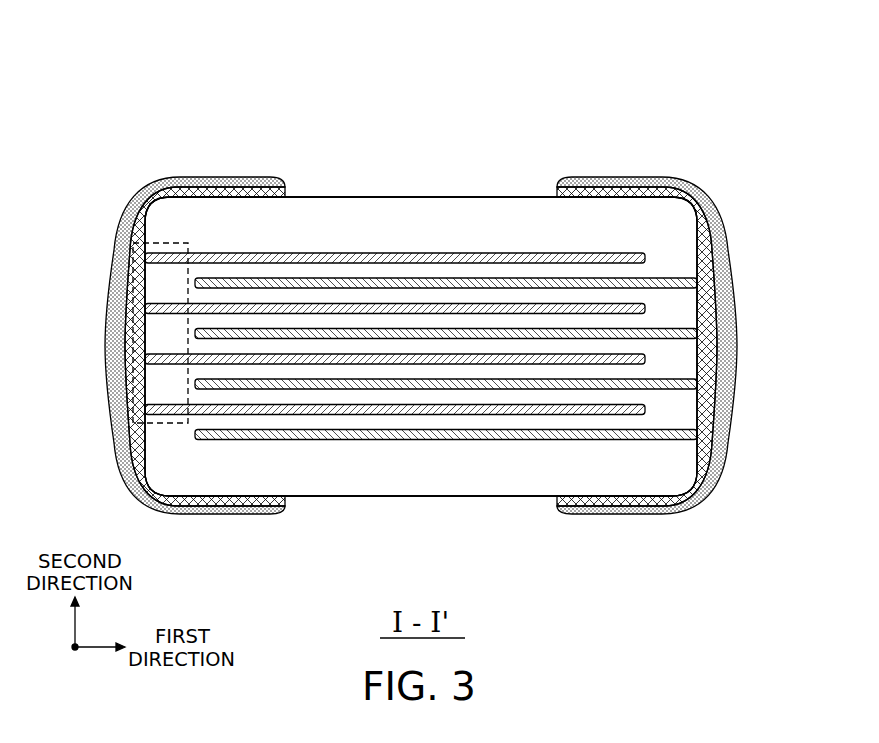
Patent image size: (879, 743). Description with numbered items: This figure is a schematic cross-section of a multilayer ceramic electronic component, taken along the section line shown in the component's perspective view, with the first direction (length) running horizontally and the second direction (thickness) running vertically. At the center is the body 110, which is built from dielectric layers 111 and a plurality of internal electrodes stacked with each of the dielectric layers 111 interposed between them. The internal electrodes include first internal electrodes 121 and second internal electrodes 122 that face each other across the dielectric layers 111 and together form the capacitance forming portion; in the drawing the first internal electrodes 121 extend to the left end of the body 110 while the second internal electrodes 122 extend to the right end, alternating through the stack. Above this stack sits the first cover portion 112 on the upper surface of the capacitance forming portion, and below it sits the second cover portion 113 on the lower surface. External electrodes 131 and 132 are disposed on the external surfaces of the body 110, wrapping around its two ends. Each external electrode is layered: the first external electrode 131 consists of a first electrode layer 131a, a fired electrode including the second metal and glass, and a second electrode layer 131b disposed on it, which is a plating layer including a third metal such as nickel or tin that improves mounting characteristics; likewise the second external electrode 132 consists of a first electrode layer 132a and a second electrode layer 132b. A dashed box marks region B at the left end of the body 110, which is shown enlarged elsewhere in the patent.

The body 110 is at (527, 194).
The dielectric layer 111 is at (442, 268).
The first cover portion 112 is at (288, 225).
The second cover portion 113 is at (374, 497).
The first internal electrode 121 is at (338, 257).
The second internal electrode 122 is at (388, 278).
The first external electrode 131 is at (151, 261).
The first electrode layer 131a is at (117, 325).
The second electrode layer 131b is at (110, 350).
The second external electrode 132 is at (692, 261).
The first electrode layer 132a is at (720, 325).
The second electrode layer 132b is at (733, 352).
The region B is at (117, 283).